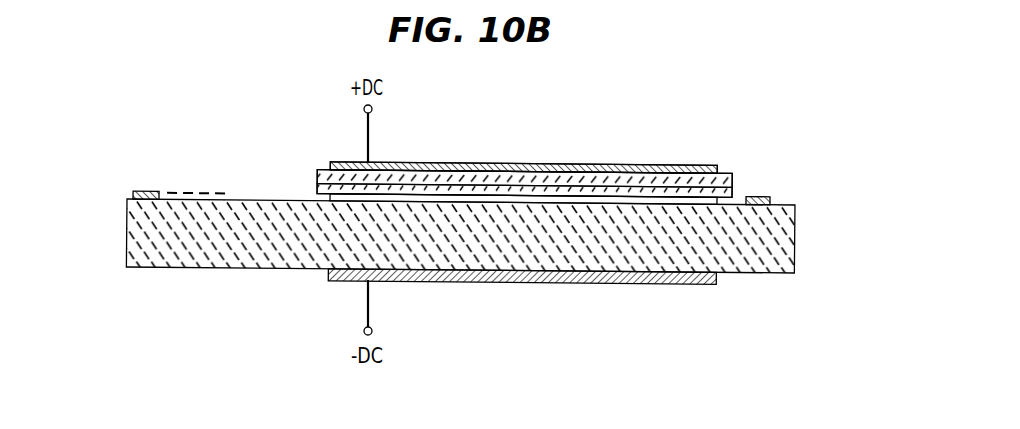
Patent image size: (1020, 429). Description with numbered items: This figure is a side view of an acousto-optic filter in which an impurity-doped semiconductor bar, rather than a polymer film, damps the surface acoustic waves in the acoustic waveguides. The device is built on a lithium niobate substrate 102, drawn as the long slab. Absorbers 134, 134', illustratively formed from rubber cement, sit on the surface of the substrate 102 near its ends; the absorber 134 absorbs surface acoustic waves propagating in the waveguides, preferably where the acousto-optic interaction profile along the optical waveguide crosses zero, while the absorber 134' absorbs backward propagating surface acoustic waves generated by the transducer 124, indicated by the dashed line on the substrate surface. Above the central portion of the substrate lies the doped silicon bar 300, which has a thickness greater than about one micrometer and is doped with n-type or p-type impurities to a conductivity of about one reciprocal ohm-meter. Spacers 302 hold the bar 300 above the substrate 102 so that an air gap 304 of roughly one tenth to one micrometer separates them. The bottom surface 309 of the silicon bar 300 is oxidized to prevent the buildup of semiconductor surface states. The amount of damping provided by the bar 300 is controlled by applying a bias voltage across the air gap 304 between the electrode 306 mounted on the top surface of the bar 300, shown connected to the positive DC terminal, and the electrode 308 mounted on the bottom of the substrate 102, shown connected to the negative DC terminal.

The substrate 102 is at (247, 198).
The transducer 124 is at (194, 192).
The absorber 134 is at (767, 168).
The absorber 134' is at (119, 162).
The doped silicon bar 300 is at (600, 160).
The spacer 302 is at (468, 160).
The air gap 304 is at (310, 198).
The electrode 306 is at (413, 160).
The electrode 308 is at (445, 281).
The bottom surface 309 is at (529, 160).